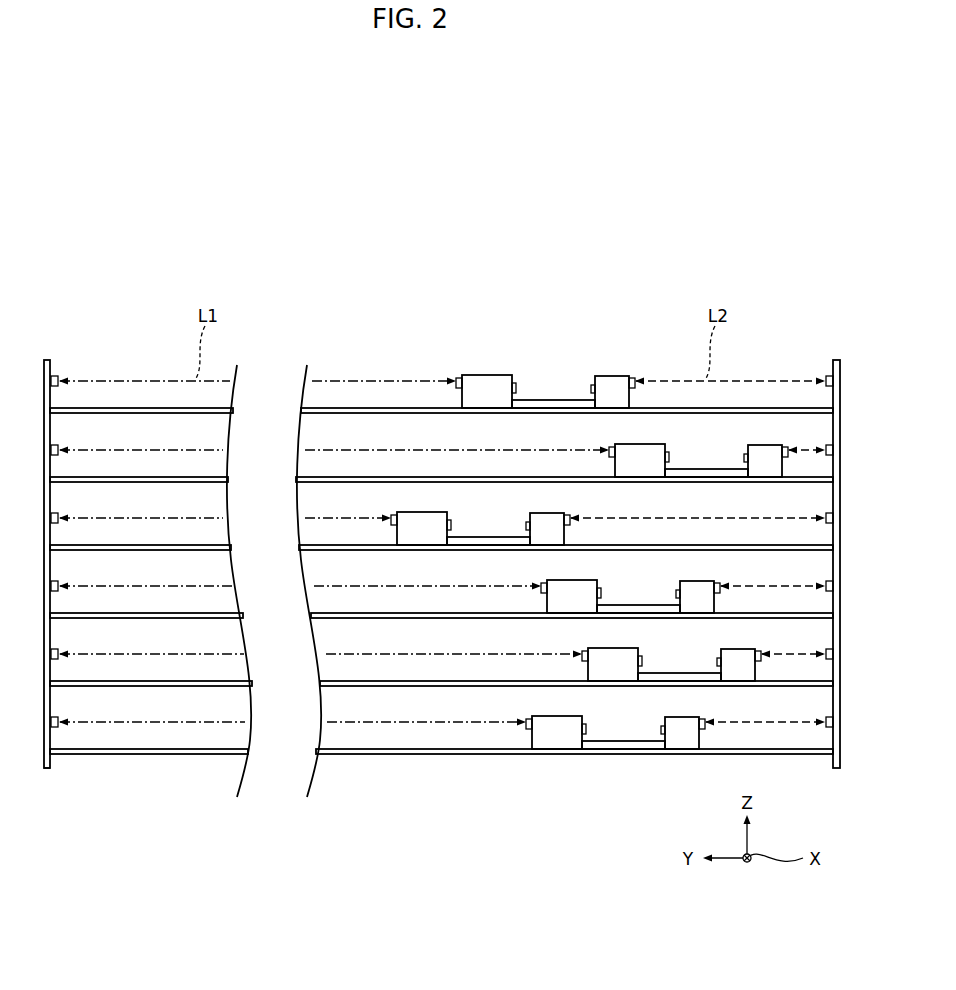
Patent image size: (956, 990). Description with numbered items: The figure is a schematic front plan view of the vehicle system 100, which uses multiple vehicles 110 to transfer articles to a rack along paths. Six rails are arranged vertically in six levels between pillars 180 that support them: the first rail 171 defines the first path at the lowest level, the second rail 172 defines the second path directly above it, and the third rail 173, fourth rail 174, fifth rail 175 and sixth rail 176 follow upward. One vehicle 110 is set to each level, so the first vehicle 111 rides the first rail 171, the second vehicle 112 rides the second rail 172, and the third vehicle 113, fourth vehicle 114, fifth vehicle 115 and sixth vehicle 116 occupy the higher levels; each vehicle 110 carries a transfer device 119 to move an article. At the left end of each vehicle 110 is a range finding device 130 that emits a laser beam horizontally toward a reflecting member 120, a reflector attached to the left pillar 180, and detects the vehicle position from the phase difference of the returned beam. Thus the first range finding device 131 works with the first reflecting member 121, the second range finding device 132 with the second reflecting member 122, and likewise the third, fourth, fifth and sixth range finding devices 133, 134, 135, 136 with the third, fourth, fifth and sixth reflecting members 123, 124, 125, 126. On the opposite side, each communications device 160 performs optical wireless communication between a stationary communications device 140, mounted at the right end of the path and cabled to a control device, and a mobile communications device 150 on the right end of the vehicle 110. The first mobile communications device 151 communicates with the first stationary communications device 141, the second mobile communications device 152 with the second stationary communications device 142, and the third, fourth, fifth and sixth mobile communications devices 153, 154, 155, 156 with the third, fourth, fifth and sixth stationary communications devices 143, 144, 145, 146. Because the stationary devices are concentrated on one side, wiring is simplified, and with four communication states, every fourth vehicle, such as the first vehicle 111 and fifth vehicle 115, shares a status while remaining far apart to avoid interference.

The vehicle system 100 is at (565, 847).
The vehicle 110 is at (471, 403).
The first vehicle 111 is at (606, 741).
The second vehicle 112 is at (663, 673).
The third vehicle 113 is at (618, 605).
The fourth vehicle 114 is at (465, 537).
The fifth vehicle 115 is at (698, 469).
The sixth vehicle 116 is at (536, 400).
The transfer device 119 is at (514, 377).
The reflecting member 120 is at (56, 378).
The first reflecting member 121 is at (59, 728).
The second reflecting member 122 is at (59, 660).
The third reflecting member 123 is at (59, 592).
The fourth reflecting member 124 is at (59, 524).
The fifth reflecting member 125 is at (59, 456).
The sixth reflecting member 126 is at (59, 387).
The range finding device 130 is at (456, 375).
The first range finding device 131 is at (530, 736).
The second range finding device 132 is at (585, 662).
The third range finding device 133 is at (544, 594).
The fourth range finding device 134 is at (394, 526).
The fifth range finding device 135 is at (612, 458).
The sixth range finding device 136 is at (457, 390).
The stationary communications device 140 is at (828, 730).
The first stationary communications device 141 is at (826, 720).
The second stationary communications device 142 is at (825, 652).
The third stationary communications device 143 is at (825, 584).
The fourth stationary communications device 144 is at (825, 516).
The fifth stationary communications device 145 is at (825, 448).
The sixth stationary communications device 146 is at (825, 379).
The mobile communications device 150 is at (708, 716).
The first mobile communications device 151 is at (706, 730).
The second mobile communications device 152 is at (762, 661).
The third mobile communications device 153 is at (721, 593).
The fourth mobile communications device 154 is at (571, 525).
The fifth mobile communications device 155 is at (783, 457).
The sixth mobile communications device 156 is at (635, 389).
The communications device 160 is at (629, 376).
The first rail 171 is at (248, 753).
The second rail 172 is at (252, 685).
The third rail 173 is at (243, 617).
The fourth rail 174 is at (231, 549).
The fifth rail 175 is at (228, 481).
The sixth rail 176 is at (233, 412).
The pillar 180 is at (440, 527).